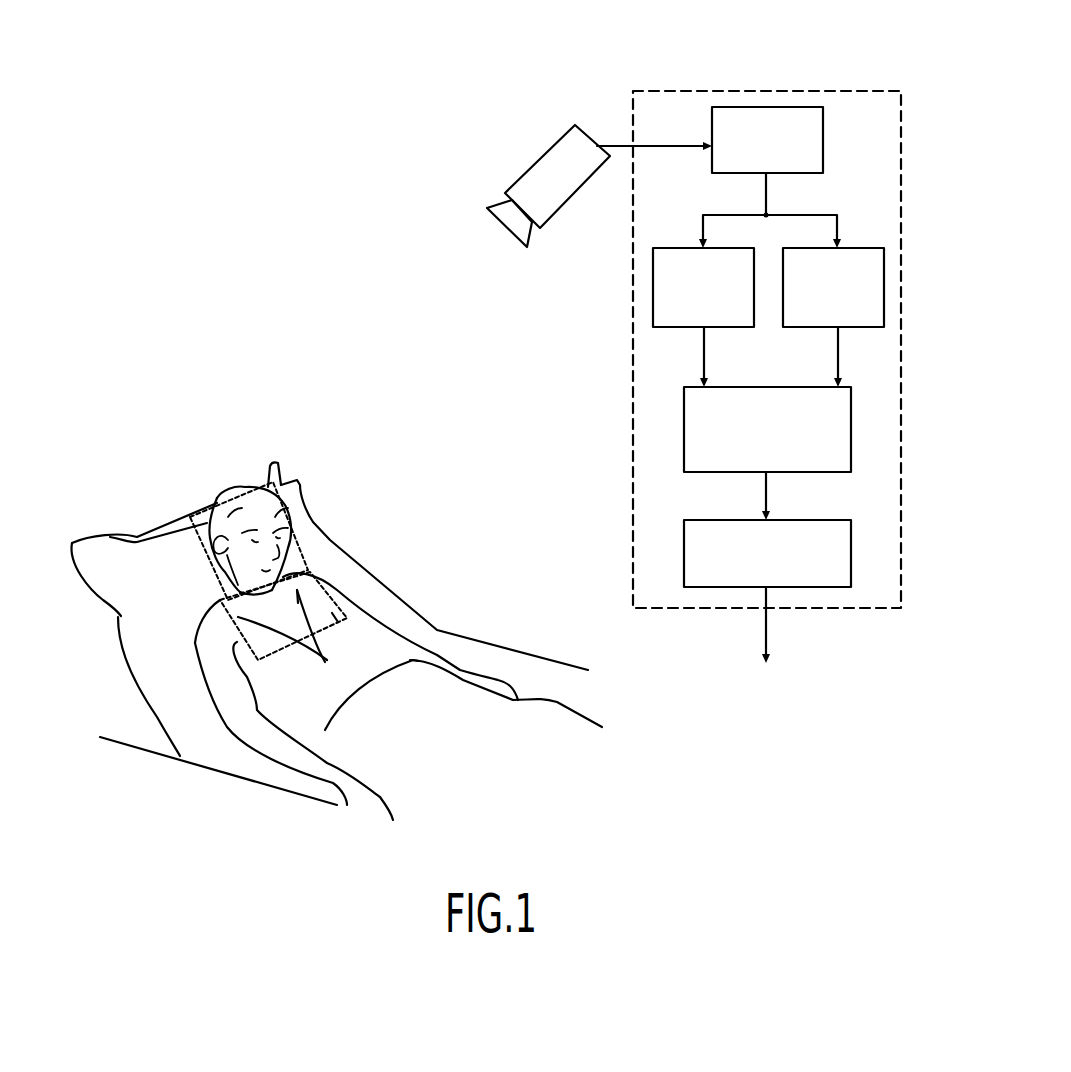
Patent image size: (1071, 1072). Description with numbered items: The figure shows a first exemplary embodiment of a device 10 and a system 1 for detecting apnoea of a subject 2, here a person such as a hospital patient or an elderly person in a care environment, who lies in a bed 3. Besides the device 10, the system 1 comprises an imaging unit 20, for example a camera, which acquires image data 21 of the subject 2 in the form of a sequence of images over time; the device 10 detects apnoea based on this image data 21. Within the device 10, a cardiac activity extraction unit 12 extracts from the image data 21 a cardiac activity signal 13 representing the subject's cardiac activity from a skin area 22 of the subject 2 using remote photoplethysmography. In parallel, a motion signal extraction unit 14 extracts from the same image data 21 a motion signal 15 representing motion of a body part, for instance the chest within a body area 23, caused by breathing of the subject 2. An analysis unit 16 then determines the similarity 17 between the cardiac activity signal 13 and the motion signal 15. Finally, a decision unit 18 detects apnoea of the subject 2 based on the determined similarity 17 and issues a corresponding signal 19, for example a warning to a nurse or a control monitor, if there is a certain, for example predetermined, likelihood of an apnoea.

The system 1 is at (468, 61).
The subject 2 is at (226, 478).
The bed 3 is at (268, 785).
The device 10 is at (728, 92).
The cardiac activity extraction unit 12 is at (654, 278).
The cardiac activity signal 13 is at (704, 357).
The motion signal extraction unit 14 is at (858, 248).
The motion signal 15 is at (838, 357).
The analysis unit 16 is at (684, 433).
The similarity 17 is at (766, 492).
The decision unit 18 is at (684, 548).
The signal 19 is at (766, 635).
The imaging unit 20 is at (546, 152).
The image data 21 is at (610, 143).
The skin area 22 is at (200, 513).
The body area 23 is at (332, 600).